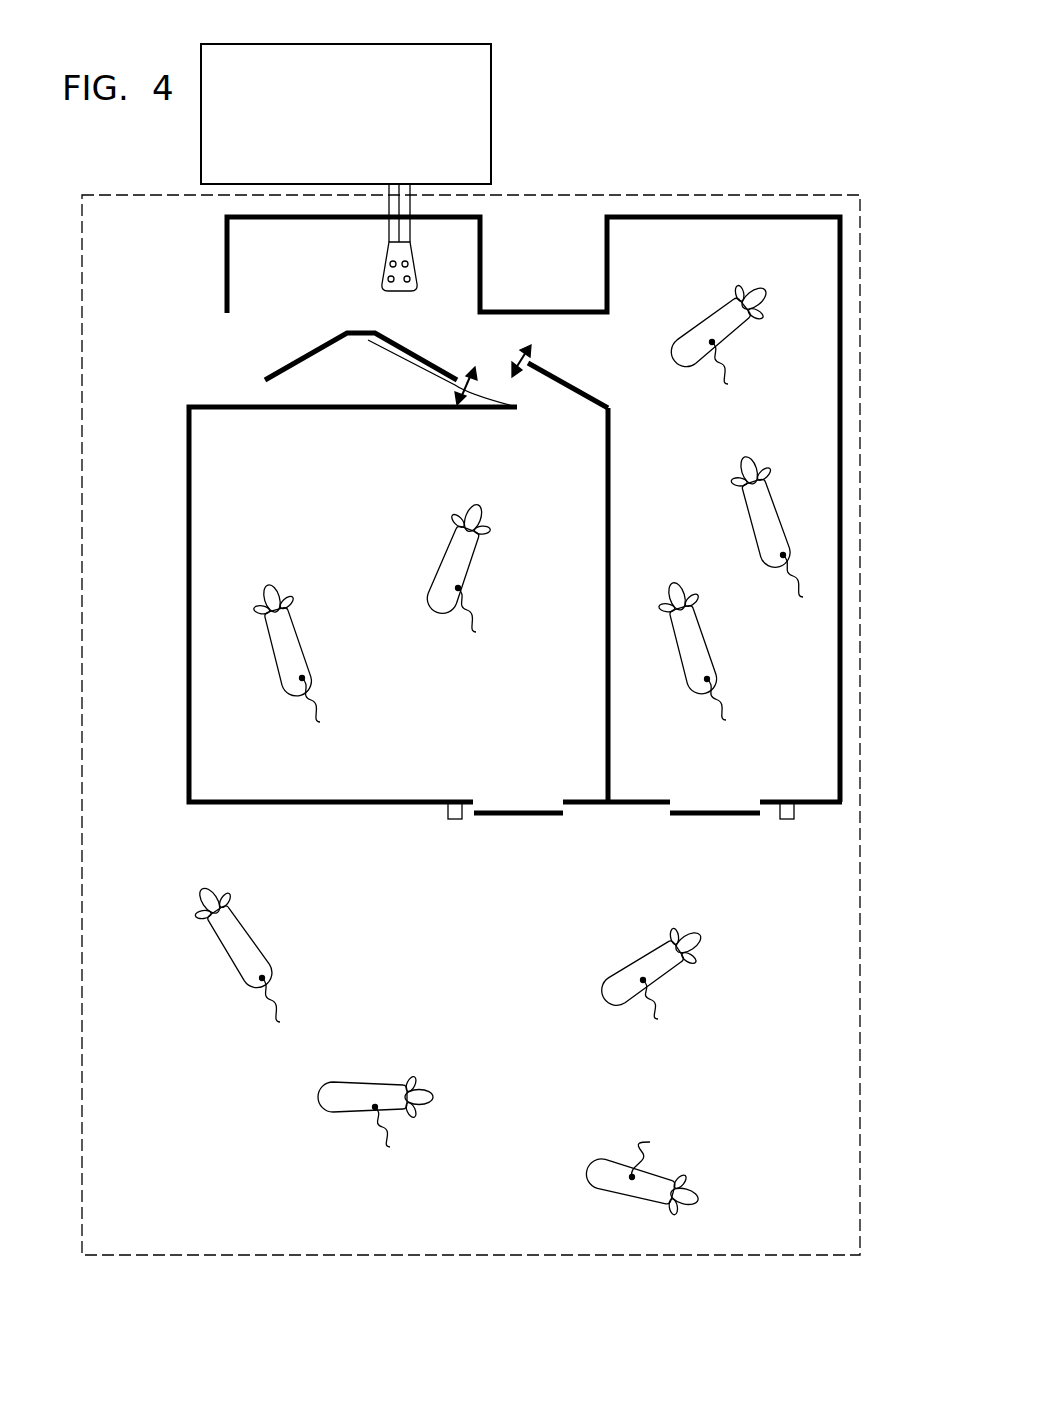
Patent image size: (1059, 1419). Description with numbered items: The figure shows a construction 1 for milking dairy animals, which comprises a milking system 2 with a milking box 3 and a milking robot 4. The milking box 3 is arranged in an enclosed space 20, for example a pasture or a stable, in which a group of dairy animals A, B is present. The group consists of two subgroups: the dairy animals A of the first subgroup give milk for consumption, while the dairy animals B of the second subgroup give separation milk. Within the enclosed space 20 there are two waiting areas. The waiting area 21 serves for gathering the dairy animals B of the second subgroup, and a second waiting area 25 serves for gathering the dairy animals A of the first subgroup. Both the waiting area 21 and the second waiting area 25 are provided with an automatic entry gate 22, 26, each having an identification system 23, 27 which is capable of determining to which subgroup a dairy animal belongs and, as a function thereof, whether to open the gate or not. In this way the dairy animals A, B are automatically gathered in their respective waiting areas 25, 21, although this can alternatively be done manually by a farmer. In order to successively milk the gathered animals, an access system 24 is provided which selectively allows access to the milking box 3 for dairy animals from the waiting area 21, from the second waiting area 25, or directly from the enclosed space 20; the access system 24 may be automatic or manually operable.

The construction 1 is at (754, 98).
The milking system 2 is at (489, 74).
The milking box 3 is at (226, 275).
The milking robot 4 is at (404, 207).
The enclosed space 20 is at (520, 1006).
The waiting area 21 is at (707, 521).
The automatic entry gate 22 is at (715, 813).
The identification system 23 is at (787, 815).
The access system 24 is at (558, 377).
The second waiting area 25 is at (362, 521).
The automatic entry gate 26 is at (517, 813).
The identification system 27 is at (455, 815).
The dairy animals of the first subgroup A is at (448, 829).
The dairy animals of the second subgroup B is at (701, 747).